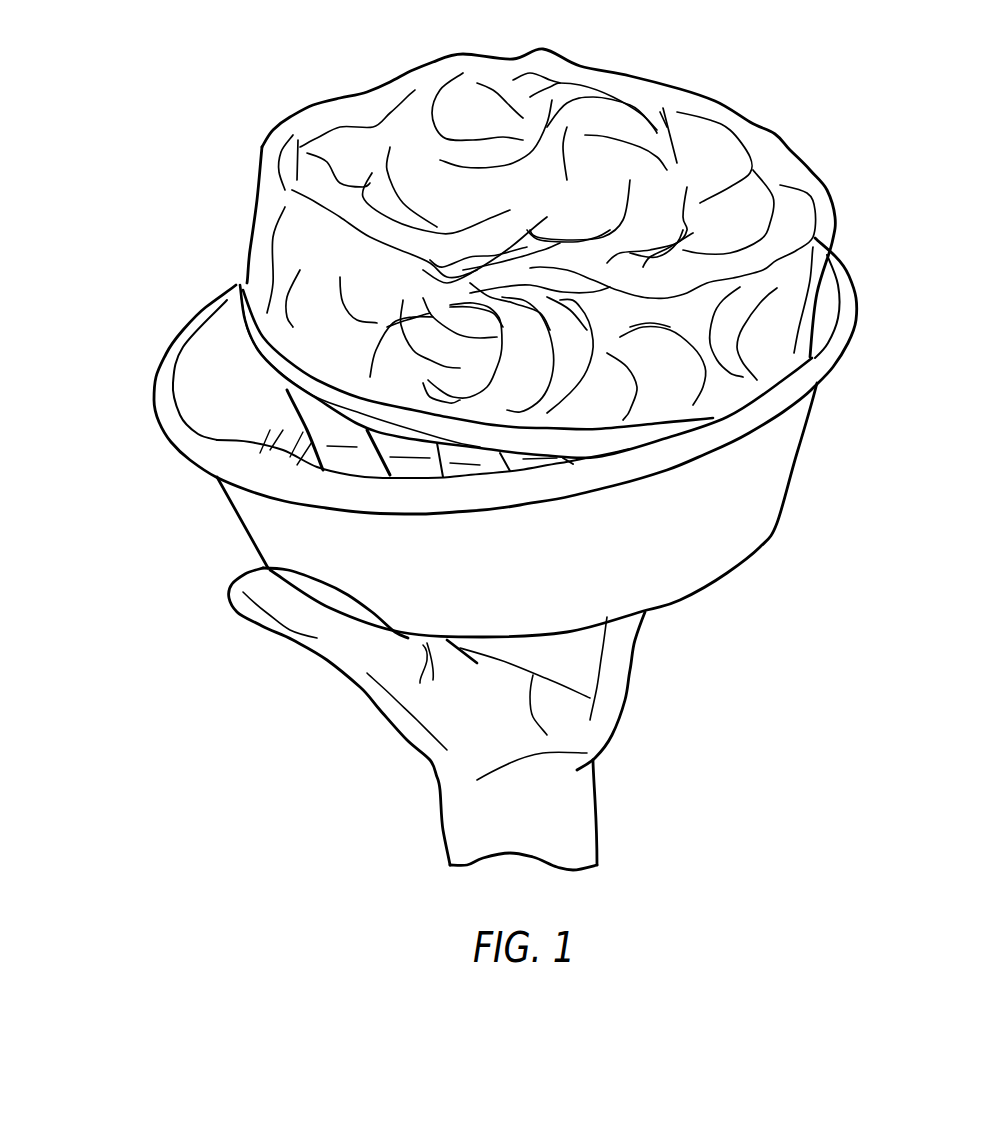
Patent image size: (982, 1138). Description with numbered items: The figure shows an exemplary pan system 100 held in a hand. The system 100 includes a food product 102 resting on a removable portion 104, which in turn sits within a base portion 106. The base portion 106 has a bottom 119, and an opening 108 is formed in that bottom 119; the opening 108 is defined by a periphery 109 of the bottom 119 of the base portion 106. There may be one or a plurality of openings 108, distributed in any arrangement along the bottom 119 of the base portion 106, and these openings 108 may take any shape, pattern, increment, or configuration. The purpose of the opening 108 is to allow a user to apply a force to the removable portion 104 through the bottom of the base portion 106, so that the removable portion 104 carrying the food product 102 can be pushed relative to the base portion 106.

The system 100 is at (696, 79).
The food product 102 is at (255, 188).
The removable portion 104 is at (225, 301).
The base portion 106 is at (242, 520).
The opening 108 is at (223, 440).
The periphery 109 is at (285, 389).
The bottom 119 is at (295, 430).